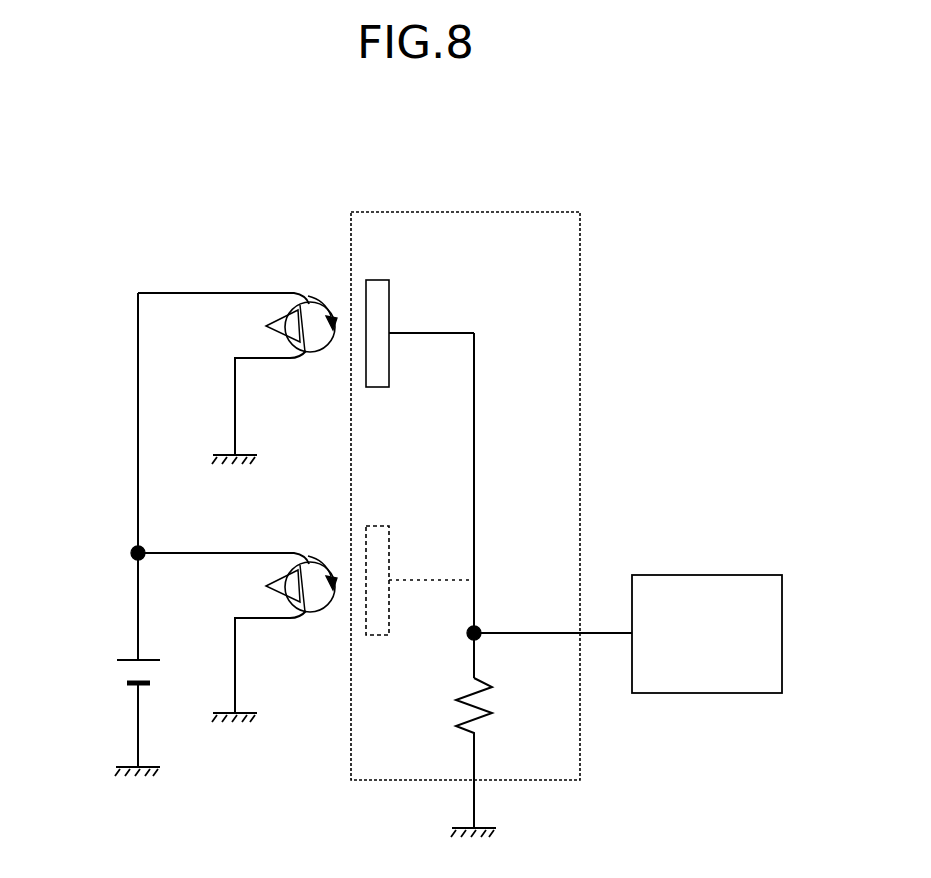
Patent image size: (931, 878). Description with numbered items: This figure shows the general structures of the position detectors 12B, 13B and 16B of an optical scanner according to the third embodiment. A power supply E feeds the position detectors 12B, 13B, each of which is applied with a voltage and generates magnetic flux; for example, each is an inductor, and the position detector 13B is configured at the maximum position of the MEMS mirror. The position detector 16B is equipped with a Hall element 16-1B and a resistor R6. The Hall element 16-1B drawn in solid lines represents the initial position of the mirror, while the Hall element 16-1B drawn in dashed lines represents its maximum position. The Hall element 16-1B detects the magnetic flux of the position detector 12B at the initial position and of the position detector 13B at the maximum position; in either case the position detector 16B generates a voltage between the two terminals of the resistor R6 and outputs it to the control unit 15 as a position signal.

The position detector 16B is at (460, 210).
The Hall element 16-1B is at (378, 280).
The position detector 12B is at (308, 293).
The position detector 13B is at (308, 553).
The control unit 15 is at (705, 575).
The resistor R6 is at (458, 720).
The power supply E is at (126, 534).